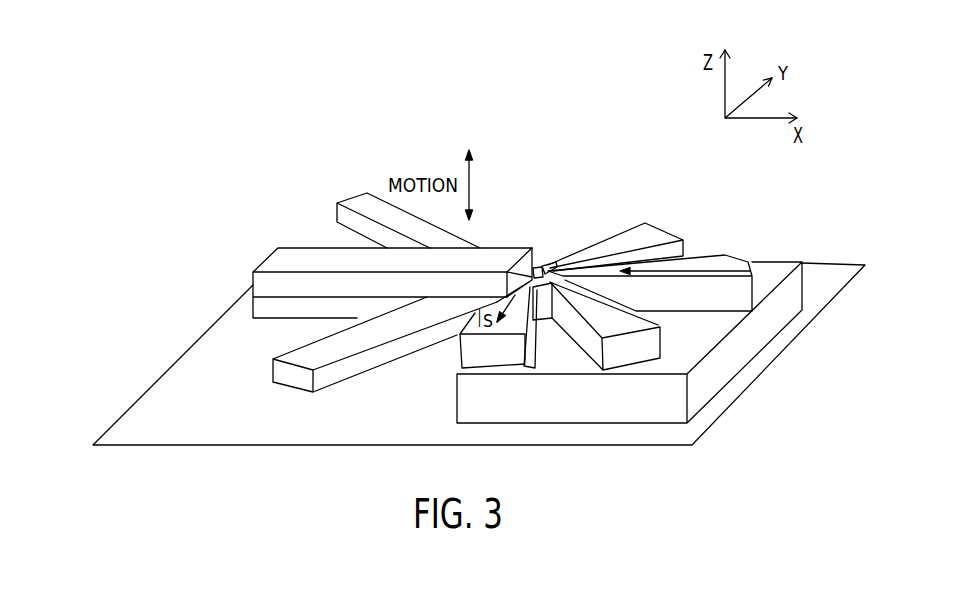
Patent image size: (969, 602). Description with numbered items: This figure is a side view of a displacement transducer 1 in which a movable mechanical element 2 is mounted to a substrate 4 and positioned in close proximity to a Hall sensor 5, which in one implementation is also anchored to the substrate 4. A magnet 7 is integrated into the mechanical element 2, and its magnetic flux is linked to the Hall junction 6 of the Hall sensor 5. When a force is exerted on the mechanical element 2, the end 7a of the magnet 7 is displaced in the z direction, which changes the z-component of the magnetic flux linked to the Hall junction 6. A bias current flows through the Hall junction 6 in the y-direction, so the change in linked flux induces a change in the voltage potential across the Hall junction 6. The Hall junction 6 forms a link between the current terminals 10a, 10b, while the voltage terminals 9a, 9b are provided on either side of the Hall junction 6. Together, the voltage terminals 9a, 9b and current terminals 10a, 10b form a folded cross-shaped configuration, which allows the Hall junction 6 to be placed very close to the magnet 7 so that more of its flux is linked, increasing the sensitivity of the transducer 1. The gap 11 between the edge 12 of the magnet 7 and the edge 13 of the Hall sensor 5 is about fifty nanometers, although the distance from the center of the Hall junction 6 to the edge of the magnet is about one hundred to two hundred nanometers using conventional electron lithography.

The displacement transducer 1 is at (483, 92).
The movable mechanical element 2 is at (338, 180).
The substrate 4 is at (189, 429).
The Hall sensor 5 is at (633, 158).
The Hall junction 6 is at (548, 300).
The magnet 7 is at (295, 248).
The end of the magnet 7a is at (532, 248).
The voltage terminal 9a is at (637, 222).
The voltage terminal 9b is at (660, 330).
The current terminal 10a is at (725, 255).
The current terminal 10b is at (527, 362).
The gap 11 is at (545, 257).
The edge of the magnet 12 is at (537, 266).
The edge of the Hall sensor 13 is at (457, 377).